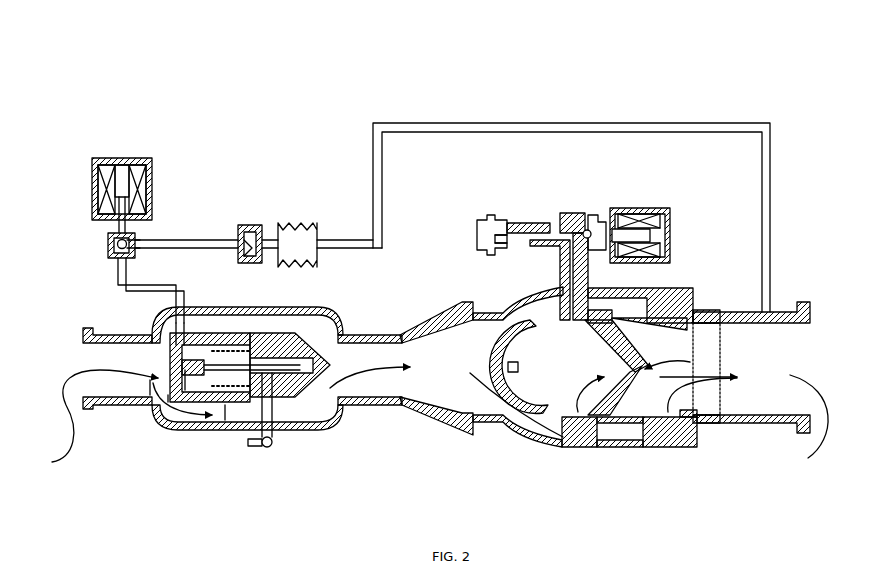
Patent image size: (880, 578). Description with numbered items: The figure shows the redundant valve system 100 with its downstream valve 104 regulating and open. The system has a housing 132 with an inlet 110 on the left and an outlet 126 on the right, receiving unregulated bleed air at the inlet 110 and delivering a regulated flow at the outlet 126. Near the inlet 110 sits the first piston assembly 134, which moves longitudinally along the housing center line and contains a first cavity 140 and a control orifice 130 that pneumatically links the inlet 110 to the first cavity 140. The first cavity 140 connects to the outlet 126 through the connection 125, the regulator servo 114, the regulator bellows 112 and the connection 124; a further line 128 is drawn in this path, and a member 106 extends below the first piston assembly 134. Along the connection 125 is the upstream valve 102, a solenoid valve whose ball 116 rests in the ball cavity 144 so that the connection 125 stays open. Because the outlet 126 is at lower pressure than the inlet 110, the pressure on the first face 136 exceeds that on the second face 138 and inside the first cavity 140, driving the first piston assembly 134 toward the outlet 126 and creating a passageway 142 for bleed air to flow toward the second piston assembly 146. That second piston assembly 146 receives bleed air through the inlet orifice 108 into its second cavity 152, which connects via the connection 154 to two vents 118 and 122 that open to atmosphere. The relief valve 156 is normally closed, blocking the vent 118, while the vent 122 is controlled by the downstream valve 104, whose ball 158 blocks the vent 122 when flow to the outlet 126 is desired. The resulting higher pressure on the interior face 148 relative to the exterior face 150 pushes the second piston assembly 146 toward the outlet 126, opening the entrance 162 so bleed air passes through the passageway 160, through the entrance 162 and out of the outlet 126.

The redundant valve system 100 is at (222, 86).
The upstream valve 102 is at (116, 160).
The downstream valve 104 is at (650, 210).
The position sensor rod 106 is at (267, 448).
The inlet orifice 108 is at (508, 365).
The inlet 110 is at (94, 422).
The regulator bellows 112 is at (300, 226).
The regulator servo 114 is at (244, 226).
The ball 116 is at (130, 240).
The vent 118 is at (533, 223).
The vent 122 is at (578, 215).
The connection 124 is at (516, 123).
The connection 125 is at (118, 285).
The outlet 126 is at (809, 424).
The pressure pipe 128 is at (217, 250).
The control orifice 130 is at (170, 352).
The housing 132 is at (397, 333).
The first piston assembly 134 is at (232, 420).
The first face 136 is at (154, 398).
The second face 138 is at (190, 395).
The first cavity 140 is at (262, 345).
The passageway 142 is at (170, 408).
The ball cavity 144 is at (108, 240).
The second piston assembly 146 is at (677, 447).
The interior face 148 is at (578, 447).
The exterior face 150 is at (706, 322).
The second cavity 152 is at (588, 366).
The connection 154 is at (562, 285).
The relief valve 156 is at (490, 220).
The ball 158 is at (590, 240).
The passageway 160 is at (562, 447).
The entrance 162 is at (655, 447).